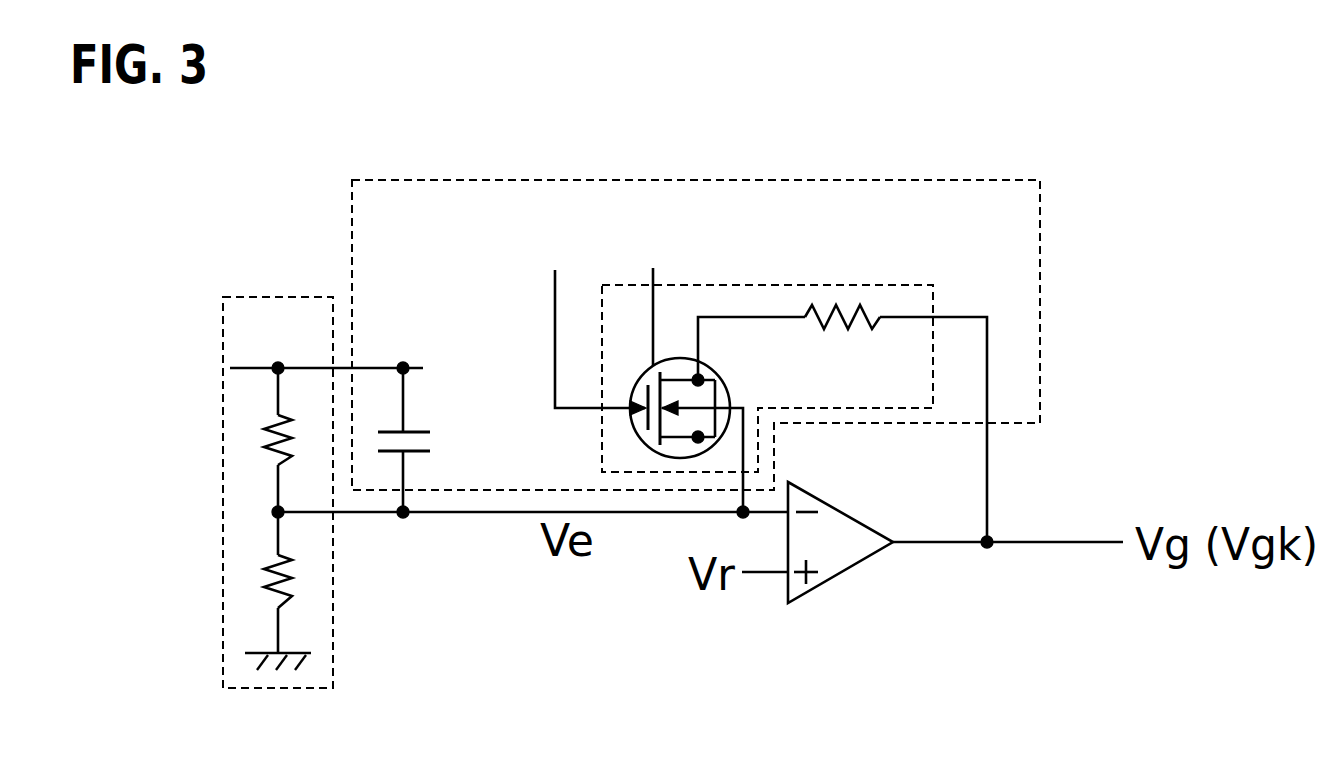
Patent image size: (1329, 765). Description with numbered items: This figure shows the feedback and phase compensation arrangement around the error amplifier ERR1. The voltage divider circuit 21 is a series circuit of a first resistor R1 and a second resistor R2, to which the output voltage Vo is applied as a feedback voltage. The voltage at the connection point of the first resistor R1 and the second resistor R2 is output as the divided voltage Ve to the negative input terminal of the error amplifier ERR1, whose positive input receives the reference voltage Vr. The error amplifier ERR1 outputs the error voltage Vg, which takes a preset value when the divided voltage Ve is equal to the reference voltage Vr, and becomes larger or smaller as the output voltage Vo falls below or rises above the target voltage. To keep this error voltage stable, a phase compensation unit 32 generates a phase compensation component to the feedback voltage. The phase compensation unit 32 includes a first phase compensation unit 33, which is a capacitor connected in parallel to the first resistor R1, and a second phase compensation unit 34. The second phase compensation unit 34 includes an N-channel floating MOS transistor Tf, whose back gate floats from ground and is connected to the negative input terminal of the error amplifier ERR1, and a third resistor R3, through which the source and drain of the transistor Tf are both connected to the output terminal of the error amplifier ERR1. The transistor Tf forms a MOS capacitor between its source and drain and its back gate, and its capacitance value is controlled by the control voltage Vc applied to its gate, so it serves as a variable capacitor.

The voltage divider circuit 21 is at (336, 612).
The phase compensation unit 32 is at (1040, 303).
The first phase compensation unit 33 is at (420, 428).
The second phase compensation unit 34 is at (759, 283).
The first resistor R1 is at (265, 420).
The second resistor R2 is at (266, 563).
The third resistor R3 is at (868, 302).
The N-channel floating MOS transistor Tf is at (722, 362).
The error amplifier ERR1 is at (856, 572).